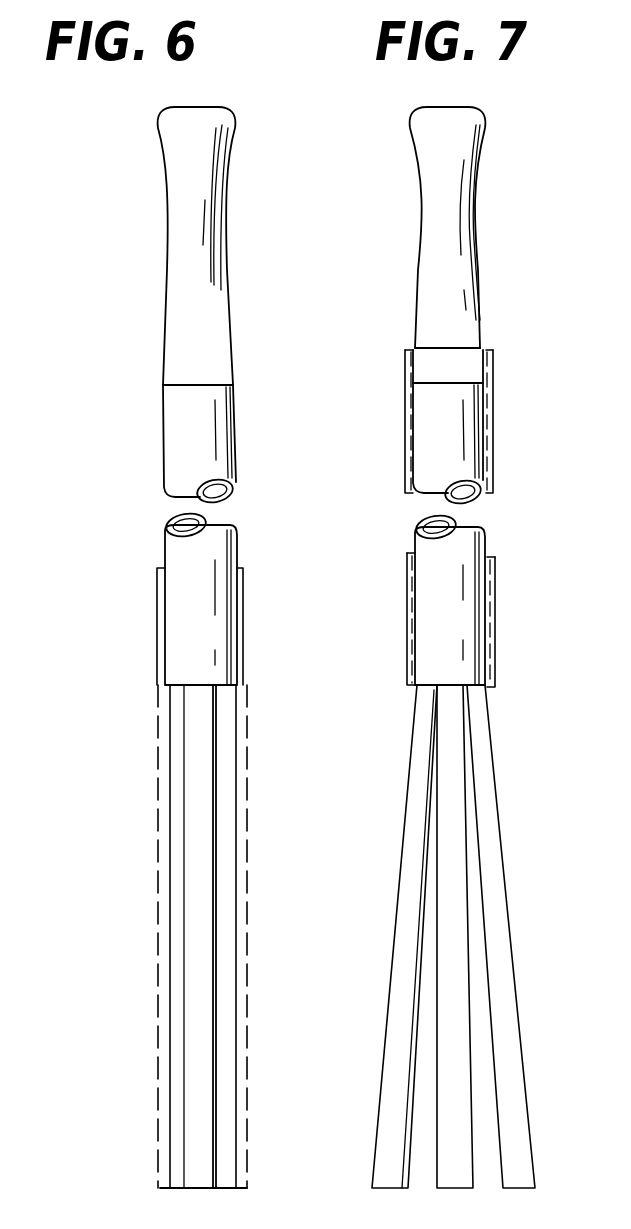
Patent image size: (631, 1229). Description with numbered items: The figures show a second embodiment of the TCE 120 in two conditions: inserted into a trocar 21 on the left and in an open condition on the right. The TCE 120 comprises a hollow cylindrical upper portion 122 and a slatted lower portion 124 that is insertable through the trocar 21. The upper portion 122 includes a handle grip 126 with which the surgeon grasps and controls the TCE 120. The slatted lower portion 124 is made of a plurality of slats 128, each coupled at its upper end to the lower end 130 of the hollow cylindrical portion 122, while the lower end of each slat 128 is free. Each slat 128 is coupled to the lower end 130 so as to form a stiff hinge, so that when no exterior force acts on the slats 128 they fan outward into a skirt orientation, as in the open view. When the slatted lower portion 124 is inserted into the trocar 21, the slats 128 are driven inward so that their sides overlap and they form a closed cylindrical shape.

In FIG. 6, the TCE 120 is at (158, 193).
In FIG. 7, the TCE 120 is at (405, 200).
In FIG. 6, the hollow cylindrical upper portion 122 is at (164, 323).
In FIG. 7, the hollow cylindrical upper portion 122 is at (448, 427).
In FIG. 6, the slatted lower portion 124 is at (155, 1185).
In FIG. 7, the slatted lower portion 124 is at (436, 936).
In FIG. 6, the handle grip 126 is at (205, 233).
In FIG. 7, the slats 128 is at (367, 1178).
In FIG. 6, the lower end 130 is at (200, 684).
In FIG. 7, the lower end 130 is at (455, 683).
In FIG. 7, the trocar 21 is at (495, 578).